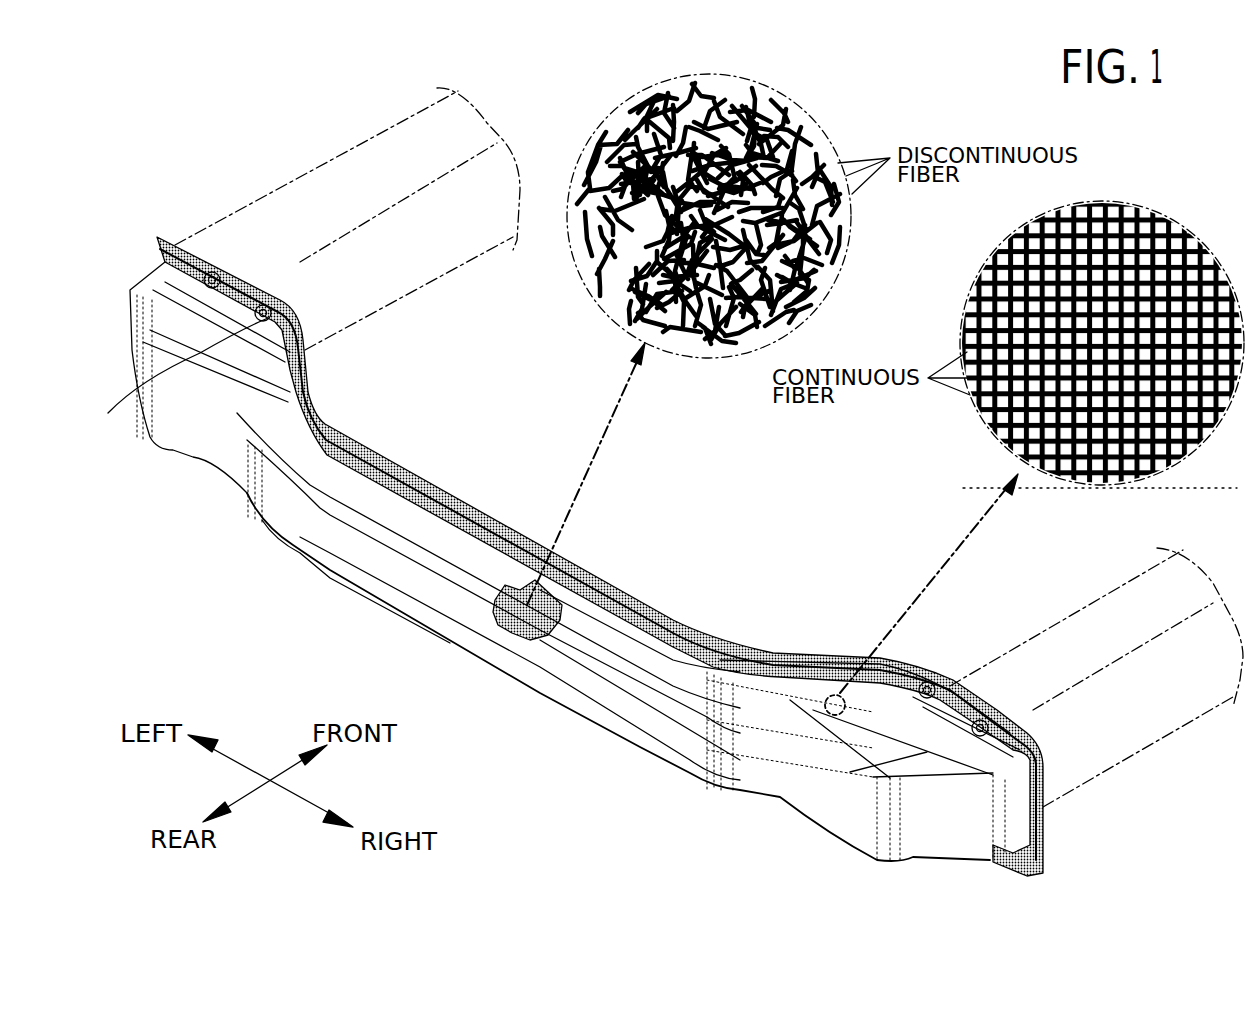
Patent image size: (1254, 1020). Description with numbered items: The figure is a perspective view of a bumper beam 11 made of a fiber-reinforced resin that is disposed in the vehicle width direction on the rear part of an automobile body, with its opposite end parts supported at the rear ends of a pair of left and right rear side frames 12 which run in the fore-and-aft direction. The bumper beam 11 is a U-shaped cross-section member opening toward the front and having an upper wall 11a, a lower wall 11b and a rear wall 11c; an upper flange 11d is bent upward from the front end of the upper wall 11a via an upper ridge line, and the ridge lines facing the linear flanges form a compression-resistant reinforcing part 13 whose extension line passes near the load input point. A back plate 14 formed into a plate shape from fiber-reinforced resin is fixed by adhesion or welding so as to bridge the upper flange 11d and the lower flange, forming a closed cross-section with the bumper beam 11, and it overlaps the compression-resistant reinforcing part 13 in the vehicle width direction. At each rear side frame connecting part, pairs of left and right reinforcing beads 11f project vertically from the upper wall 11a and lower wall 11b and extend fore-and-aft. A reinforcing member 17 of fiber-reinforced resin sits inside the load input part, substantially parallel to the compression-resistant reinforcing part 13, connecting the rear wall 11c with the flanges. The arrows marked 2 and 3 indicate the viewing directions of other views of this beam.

The bumper beam 11 is at (552, 570).
The upper wall 11a is at (437, 533).
The lower wall 11b is at (437, 630).
The rear wall 11c is at (567, 663).
The upper flange 11d is at (598, 582).
The reinforcing beads 11f is at (160, 327).
The rear side frame 12 is at (333, 167).
The compression-resistant reinforcing part 13 is at (290, 340).
The back plate 14 is at (320, 374).
The reinforcing member 17 is at (787, 773).
The FIG. 2 view direction 2 is at (555, 432).
The FIG. 3 view direction 3 is at (718, 485).